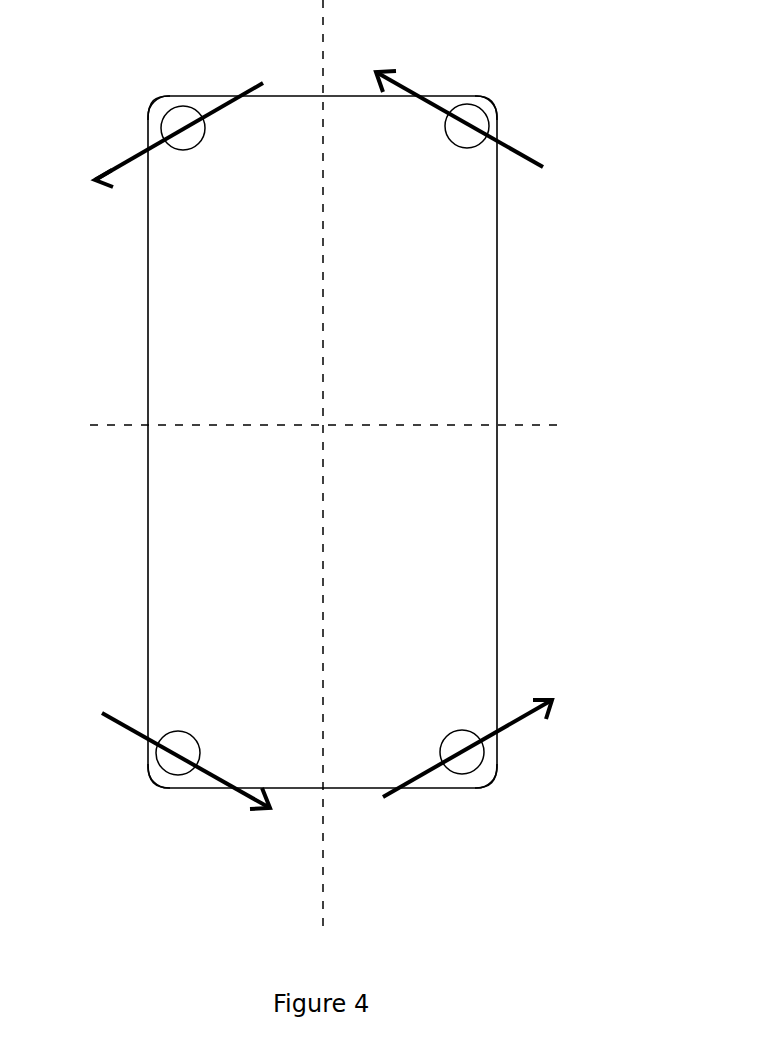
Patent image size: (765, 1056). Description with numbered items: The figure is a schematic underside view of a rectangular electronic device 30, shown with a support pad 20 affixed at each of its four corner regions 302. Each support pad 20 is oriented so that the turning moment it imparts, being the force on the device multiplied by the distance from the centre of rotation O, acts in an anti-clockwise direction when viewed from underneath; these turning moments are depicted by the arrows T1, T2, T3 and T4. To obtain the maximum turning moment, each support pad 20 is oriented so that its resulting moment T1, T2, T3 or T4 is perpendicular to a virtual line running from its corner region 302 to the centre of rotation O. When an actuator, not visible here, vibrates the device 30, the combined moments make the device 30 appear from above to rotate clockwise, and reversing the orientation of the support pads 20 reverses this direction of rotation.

The electronic device 30 is at (497, 320).
The corner region 302 is at (148, 96).
The support pad 20 is at (172, 104).
The centre of rotation O is at (323, 428).
The turning moment T1 is at (161, 139).
The turning moment T2 is at (205, 772).
The turning moment T3 is at (486, 742).
The turning moment T4 is at (445, 110).